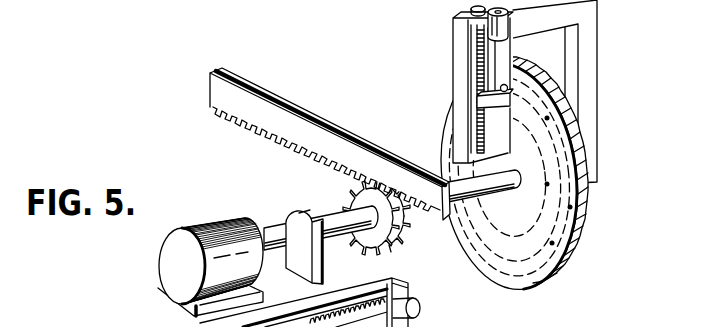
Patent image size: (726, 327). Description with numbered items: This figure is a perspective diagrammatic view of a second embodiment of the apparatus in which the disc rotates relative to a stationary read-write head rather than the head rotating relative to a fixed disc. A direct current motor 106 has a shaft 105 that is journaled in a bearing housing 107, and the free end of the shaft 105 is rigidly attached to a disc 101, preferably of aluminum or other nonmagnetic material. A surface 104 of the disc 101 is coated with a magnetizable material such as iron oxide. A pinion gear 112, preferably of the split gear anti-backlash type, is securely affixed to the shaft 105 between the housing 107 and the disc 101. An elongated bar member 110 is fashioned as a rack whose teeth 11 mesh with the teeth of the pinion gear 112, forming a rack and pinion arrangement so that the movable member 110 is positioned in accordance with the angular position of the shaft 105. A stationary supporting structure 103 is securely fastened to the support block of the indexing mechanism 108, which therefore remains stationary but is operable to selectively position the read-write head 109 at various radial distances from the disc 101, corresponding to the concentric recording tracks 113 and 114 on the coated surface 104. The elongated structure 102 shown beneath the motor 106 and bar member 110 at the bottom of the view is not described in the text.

The disc 101 is at (593, 189).
The base rail 102 is at (310, 302).
The stationary supporting structure 103 is at (582, 60).
The surface of the disc 104 is at (518, 270).
The shaft 105 is at (273, 228).
The direct current motor 106 is at (212, 228).
The bearing housing 107 is at (302, 213).
The indexing mechanism 108 is at (445, 66).
The read-write head 109 is at (510, 72).
The elongated bar member 110 is at (282, 104).
The teeth 11 is at (297, 149).
The pinion gear 112 is at (378, 250).
The concentric recording track 113 is at (589, 224).
The concentric recording track 114 is at (578, 270).